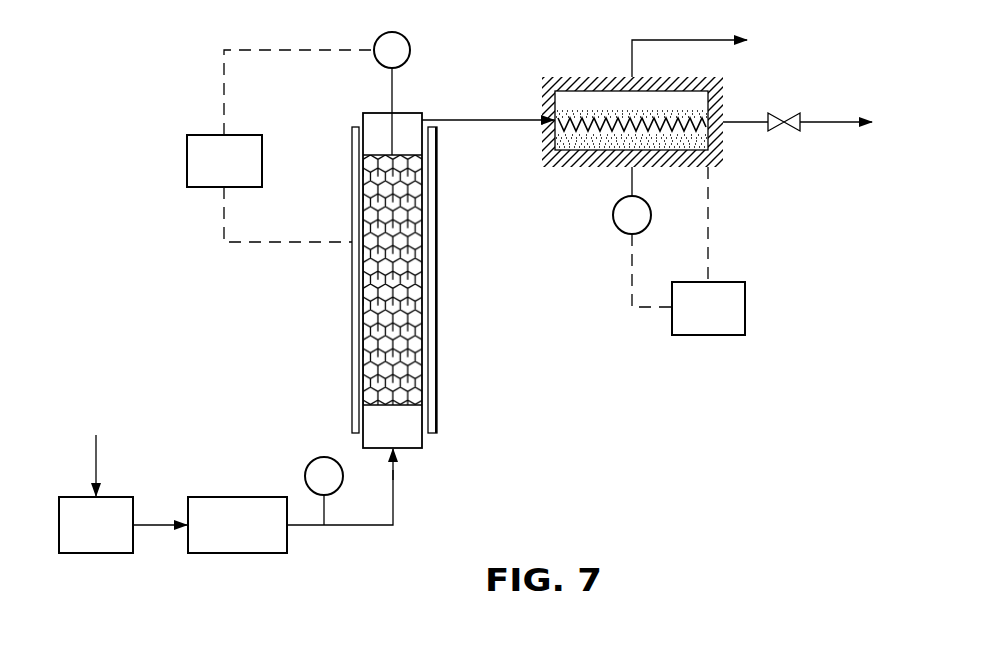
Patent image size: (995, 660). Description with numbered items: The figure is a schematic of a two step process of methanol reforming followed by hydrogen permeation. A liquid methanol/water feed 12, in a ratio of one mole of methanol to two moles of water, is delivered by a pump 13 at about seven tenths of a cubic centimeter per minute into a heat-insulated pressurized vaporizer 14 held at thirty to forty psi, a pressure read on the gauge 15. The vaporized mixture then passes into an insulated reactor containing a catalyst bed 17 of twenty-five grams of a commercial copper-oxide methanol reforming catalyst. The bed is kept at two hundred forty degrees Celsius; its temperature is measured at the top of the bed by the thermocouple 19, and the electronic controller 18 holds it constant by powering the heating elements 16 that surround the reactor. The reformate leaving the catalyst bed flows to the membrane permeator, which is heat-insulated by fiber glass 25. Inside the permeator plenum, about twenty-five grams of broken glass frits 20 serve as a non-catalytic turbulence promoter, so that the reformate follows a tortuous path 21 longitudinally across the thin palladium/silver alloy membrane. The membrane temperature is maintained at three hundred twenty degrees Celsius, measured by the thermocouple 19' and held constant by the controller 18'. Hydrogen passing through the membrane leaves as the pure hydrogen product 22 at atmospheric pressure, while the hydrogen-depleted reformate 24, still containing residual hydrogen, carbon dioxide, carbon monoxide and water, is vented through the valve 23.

The liquid methanol/water feed 12 is at (95, 452).
The pump 13 is at (81, 541).
The pressurized vaporizer 14 is at (222, 541).
The gauge 15 is at (311, 460).
The heating elements 16 is at (352, 292).
The catalyst bed 17 is at (424, 335).
The electronic controller 18 is at (280, 146).
The thermocouple 19 is at (414, 82).
The thermocouple 19' is at (604, 220).
The controller 18' is at (688, 251).
The broken glass frits 20 is at (588, 152).
The tortuous path 21 is at (605, 120).
The hydrogen product 22 is at (712, 52).
The valve 23 is at (782, 118).
The hydrogen-depleted reformate 24 is at (818, 125).
The fiber glass 25 is at (709, 153).